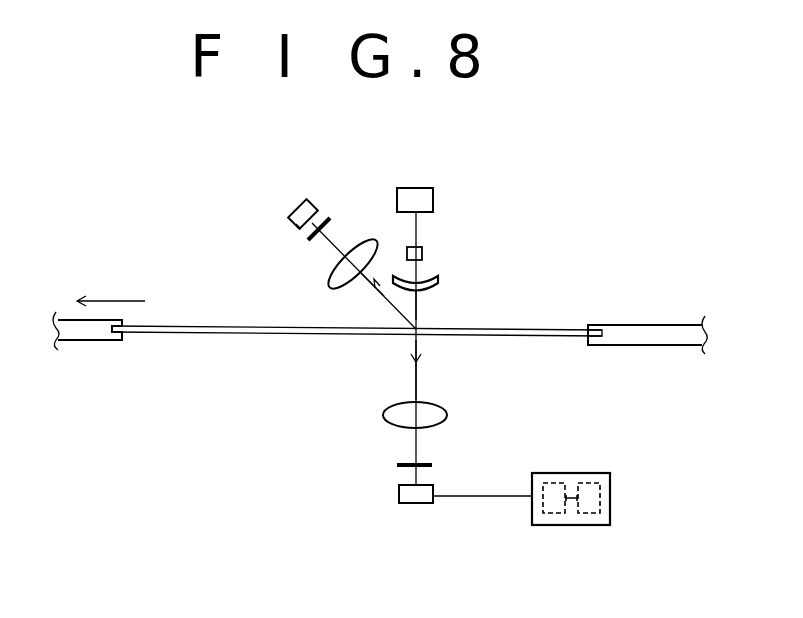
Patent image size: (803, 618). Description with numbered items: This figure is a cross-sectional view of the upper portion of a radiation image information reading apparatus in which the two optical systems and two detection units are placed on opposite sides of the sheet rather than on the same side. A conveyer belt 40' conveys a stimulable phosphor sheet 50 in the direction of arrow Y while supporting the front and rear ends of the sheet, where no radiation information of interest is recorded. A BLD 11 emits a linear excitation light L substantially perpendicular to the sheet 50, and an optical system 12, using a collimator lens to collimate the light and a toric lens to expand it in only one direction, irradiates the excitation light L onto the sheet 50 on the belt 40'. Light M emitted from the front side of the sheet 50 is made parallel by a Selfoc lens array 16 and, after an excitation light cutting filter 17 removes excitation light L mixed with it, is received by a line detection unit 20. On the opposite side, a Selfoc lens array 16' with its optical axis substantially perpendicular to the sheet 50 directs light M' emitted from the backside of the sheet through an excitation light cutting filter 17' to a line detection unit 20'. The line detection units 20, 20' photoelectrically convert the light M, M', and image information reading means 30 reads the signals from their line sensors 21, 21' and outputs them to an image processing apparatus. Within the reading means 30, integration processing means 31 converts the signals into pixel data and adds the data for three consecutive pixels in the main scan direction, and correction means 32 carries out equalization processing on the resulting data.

The BLD 11 is at (427, 188).
The optical system 12 is at (450, 237).
The Selfoc lens array 16 is at (353, 243).
The excitation light cutting filter 17 is at (331, 199).
The line detection unit 20 is at (296, 189).
The line sensor 21 is at (270, 242).
The conveyer belt 40' is at (380, 355).
The stimulable phosphor sheet 50 is at (210, 334).
The Selfoc lens array 16' is at (439, 398).
The excitation light cutting filter 17' is at (446, 445).
The line detection unit 20' is at (376, 497).
The line sensor 21' is at (450, 471).
The image information reading means 30 is at (610, 495).
The integration processing means 31 is at (547, 515).
The correction means 32 is at (583, 515).
The light emitted from front side of sheet M is at (363, 299).
The linear excitation light L is at (418, 313).
The light emitted from backside of sheet M' is at (381, 370).
The conveying direction Y is at (111, 288).